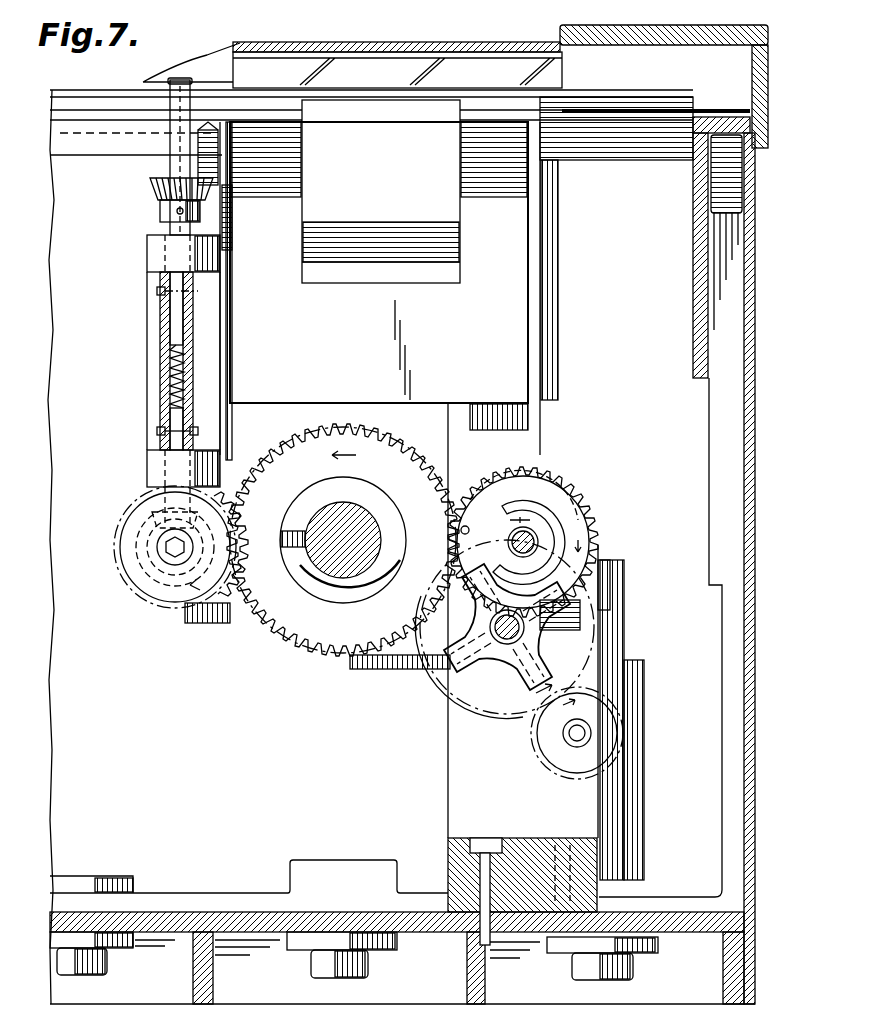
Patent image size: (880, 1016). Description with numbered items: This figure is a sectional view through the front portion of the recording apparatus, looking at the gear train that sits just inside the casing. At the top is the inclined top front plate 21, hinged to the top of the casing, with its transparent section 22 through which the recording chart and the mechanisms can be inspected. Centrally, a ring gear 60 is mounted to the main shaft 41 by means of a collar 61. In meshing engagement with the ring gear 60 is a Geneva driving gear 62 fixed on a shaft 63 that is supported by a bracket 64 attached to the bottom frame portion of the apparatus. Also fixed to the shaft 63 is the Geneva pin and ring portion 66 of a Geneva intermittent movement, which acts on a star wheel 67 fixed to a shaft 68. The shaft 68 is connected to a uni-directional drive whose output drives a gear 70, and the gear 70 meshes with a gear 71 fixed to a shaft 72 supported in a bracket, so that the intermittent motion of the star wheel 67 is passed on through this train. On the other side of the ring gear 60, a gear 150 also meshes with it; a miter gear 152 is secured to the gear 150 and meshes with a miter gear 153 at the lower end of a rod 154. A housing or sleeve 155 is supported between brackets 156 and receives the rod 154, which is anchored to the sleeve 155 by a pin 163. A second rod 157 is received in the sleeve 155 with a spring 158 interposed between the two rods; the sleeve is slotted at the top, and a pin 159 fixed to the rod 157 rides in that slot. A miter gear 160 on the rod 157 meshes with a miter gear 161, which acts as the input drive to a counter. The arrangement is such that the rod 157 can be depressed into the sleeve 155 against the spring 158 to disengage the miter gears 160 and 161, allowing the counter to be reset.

The inclined top front plate 21 is at (560, 36).
The transparent section 22 is at (358, 42).
The main shaft 41 is at (330, 562).
The ring gear 60 is at (416, 460).
The collar 61 is at (392, 522).
The Geneva driving gear 62 is at (562, 480).
The shaft 63 is at (536, 532).
The bracket 64 is at (590, 812).
The Geneva pin and ring portion 66 is at (596, 568).
The star wheel 67 is at (545, 633).
The shaft 68 is at (505, 636).
The gear 70 is at (590, 662).
The gear 71 is at (540, 754).
The shaft 72 is at (585, 735).
The gear 150 is at (216, 559).
The miter gear 152 is at (168, 572).
The miter gear 153 is at (140, 542).
The rod 154 is at (184, 415).
The housing or sleeve 155 is at (160, 369).
The brackets 156 is at (147, 254).
The second rod 157 is at (180, 318).
The spring 158 is at (186, 372).
The pin 159 is at (157, 292).
The miter gear 160 is at (150, 186).
The miter gear 161 is at (218, 165).
The pin 163 is at (157, 431).